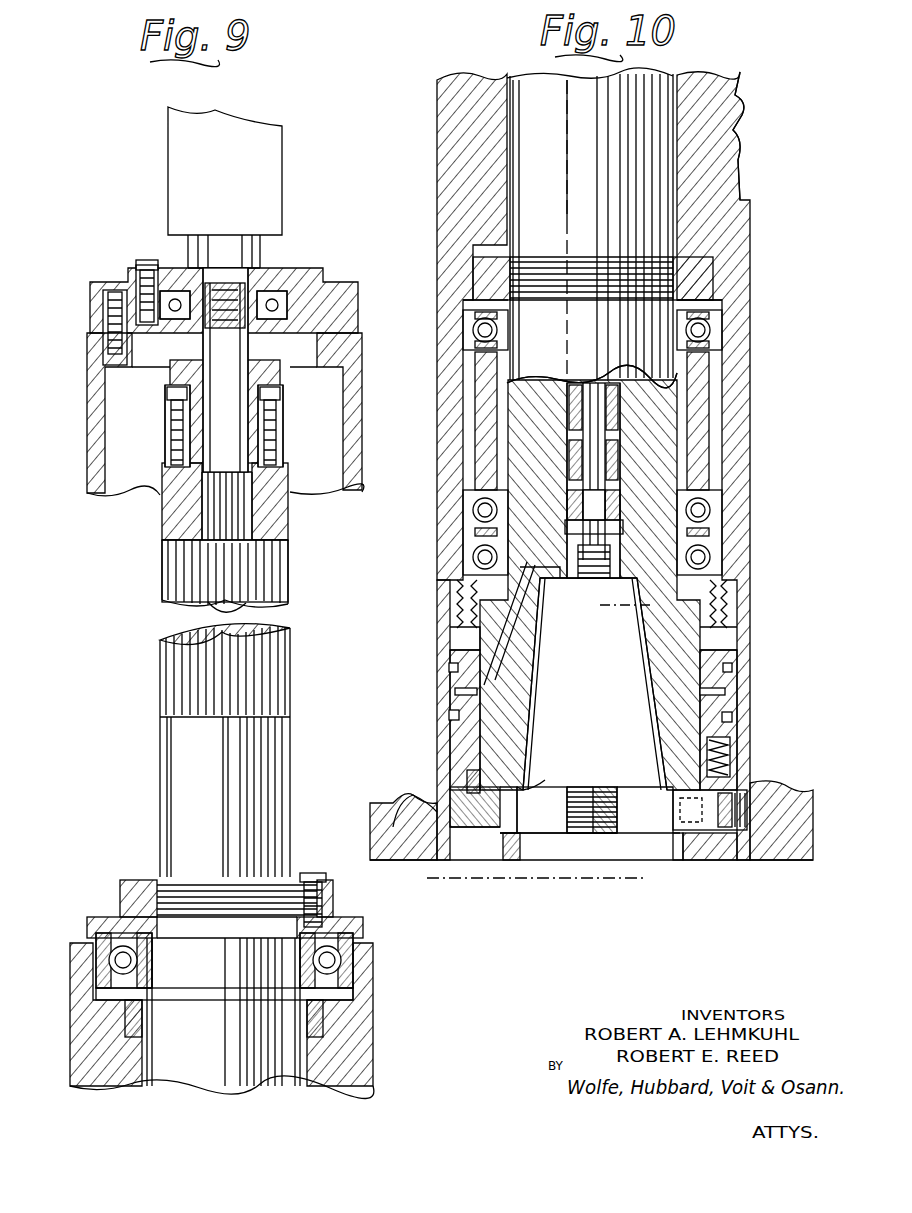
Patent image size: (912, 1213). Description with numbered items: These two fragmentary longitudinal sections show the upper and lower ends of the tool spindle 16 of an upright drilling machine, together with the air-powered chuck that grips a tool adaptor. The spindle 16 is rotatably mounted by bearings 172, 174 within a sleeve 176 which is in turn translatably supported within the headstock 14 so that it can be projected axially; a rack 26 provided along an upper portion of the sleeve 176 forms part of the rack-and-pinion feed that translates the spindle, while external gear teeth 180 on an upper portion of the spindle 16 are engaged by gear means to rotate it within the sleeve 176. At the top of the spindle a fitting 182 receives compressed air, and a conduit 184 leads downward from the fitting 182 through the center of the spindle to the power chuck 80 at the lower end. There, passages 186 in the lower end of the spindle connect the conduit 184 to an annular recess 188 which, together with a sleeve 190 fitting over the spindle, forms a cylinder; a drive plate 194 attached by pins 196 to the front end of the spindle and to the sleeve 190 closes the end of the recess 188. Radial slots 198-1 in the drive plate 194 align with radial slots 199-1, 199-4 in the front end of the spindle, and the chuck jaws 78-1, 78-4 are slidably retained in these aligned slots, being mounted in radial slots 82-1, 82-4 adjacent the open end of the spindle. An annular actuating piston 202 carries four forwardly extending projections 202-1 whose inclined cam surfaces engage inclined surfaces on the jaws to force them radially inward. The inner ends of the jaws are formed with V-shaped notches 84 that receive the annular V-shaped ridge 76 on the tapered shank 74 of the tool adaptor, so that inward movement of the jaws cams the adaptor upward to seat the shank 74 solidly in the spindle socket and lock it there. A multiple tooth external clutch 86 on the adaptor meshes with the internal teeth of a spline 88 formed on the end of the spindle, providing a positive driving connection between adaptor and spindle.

In FIG. 10, the headstock 14 is at (372, 862).
In FIG. 9, the spindle 16 is at (158, 788).
In FIG. 10, the spindle 16 is at (655, 66).
In FIG. 10, the rack 26 is at (745, 113).
In FIG. 10, the tapered shank 74 is at (637, 605).
In FIG. 10, the annular V-shaped ridge 76 is at (540, 785).
In FIG. 10, the chuck jaw 78-1 is at (493, 840).
In FIG. 10, the chuck jaw 78-4 is at (593, 830).
In FIG. 10, the power chuck 80 is at (490, 758).
In FIG. 10, the radial slot 82-1 is at (517, 810).
In FIG. 10, the radial slot 82-4 is at (580, 822).
In FIG. 10, the V-shaped notch 84 is at (457, 793).
In FIG. 10, the multiple tooth external clutch 86 is at (520, 850).
In FIG. 10, the spline 88 is at (678, 848).
In FIG. 10, the bearing 172 is at (722, 513).
In FIG. 10, the bearing 174 is at (722, 322).
In FIG. 9, the sleeve 176 is at (70, 1068).
In FIG. 10, the sleeve 176 is at (740, 413).
In FIG. 9, the external gear teeth 180 is at (160, 572).
In FIG. 9, the fitting 182 is at (265, 173).
In FIG. 9, the conduit 184 is at (233, 412).
In FIG. 10, the conduit 184 is at (567, 220).
In FIG. 10, the passage 186 is at (500, 642).
In FIG. 10, the annular recess 188 is at (455, 692).
In FIG. 10, the sleeve 190 is at (447, 715).
In FIG. 10, the drive plate 194 is at (710, 850).
In FIG. 10, the pin 196 is at (733, 800).
In FIG. 10, the radial slot 198-1 is at (412, 795).
In FIG. 10, the radial slot 199-1 is at (527, 788).
In FIG. 10, the radial slot 199-4 is at (580, 790).
In FIG. 10, the annular actuating piston 202 is at (743, 741).
In FIG. 10, the forwardly extending projection 202-1 is at (450, 792).